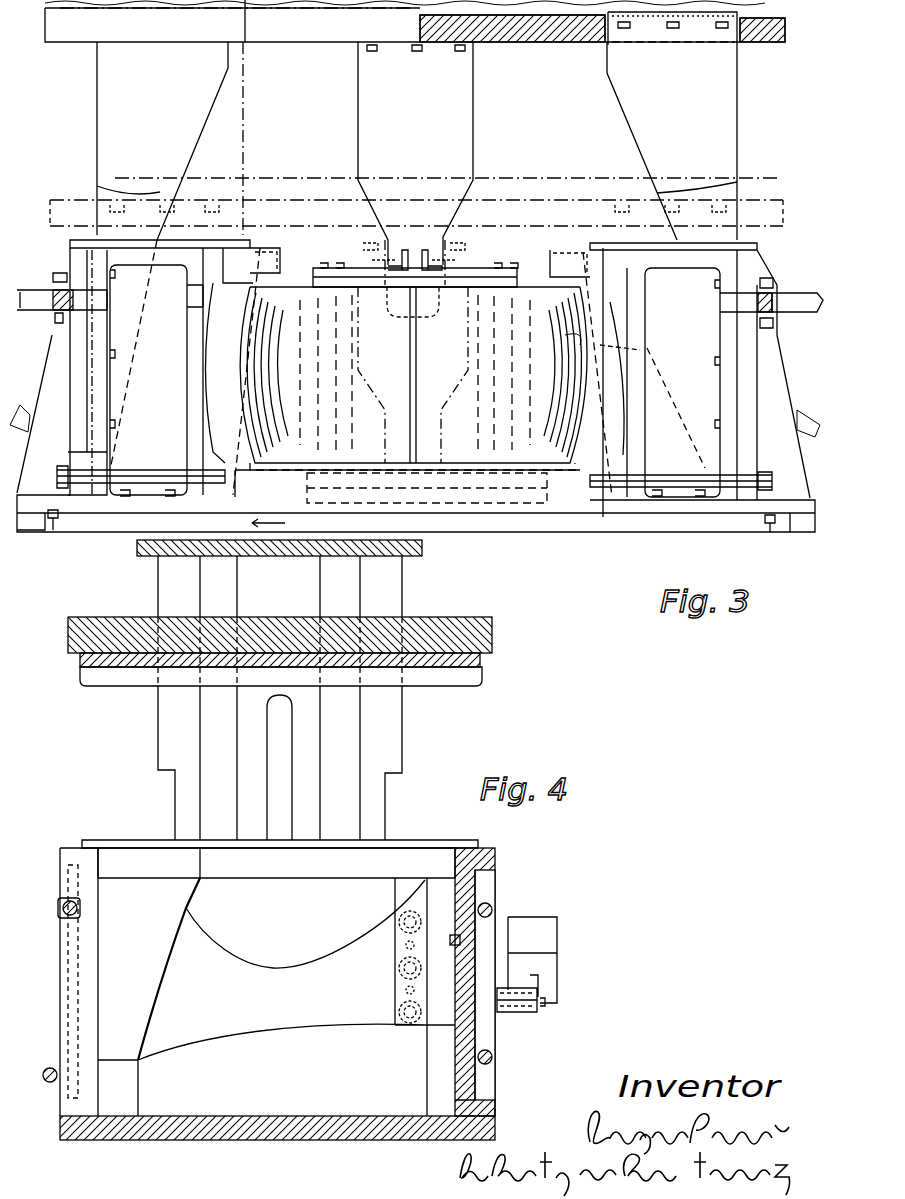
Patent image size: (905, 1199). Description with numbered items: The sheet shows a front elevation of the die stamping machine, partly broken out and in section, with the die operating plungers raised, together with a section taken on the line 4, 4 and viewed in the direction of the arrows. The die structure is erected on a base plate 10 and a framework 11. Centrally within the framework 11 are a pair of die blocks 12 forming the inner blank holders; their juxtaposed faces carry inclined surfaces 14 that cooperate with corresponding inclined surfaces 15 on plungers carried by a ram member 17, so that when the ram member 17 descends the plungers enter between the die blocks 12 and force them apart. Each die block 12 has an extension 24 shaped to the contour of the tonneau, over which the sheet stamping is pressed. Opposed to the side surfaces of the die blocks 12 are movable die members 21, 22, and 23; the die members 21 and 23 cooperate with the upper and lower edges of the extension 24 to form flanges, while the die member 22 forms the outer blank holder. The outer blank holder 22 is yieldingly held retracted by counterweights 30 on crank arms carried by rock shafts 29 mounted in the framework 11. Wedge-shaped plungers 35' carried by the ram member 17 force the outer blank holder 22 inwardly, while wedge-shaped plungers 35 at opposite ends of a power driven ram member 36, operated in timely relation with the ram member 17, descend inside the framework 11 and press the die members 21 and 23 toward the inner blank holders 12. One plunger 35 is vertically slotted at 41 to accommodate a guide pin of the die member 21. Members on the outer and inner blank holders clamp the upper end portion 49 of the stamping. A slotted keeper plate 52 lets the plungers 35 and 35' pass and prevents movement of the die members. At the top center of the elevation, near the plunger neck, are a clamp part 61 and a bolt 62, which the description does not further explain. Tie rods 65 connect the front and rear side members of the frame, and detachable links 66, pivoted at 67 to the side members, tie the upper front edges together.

In FIG. 3, the section line 4 is at (415, 255).
In FIG. 3, the base plate 10 is at (605, 533).
In FIG. 4, the base plate 10 is at (295, 1110).
In FIG. 3, the framework 11 is at (340, 30).
In FIG. 4, the framework 11 is at (490, 880).
In FIG. 3, the die blocks 12 is at (258, 318).
In FIG. 3, the inclined surfaces 14 is at (378, 405).
In FIG. 3, the inclined surfaces 15 is at (370, 210).
In FIG. 3, the ram member 17 is at (580, 45).
In FIG. 4, the ram member 17 is at (474, 609).
In FIG. 3, the die member 21 is at (676, 388).
In FIG. 4, the die member 21 is at (355, 912).
In FIG. 4, the outer blank holder 22 is at (332, 1008).
In FIG. 4, the die member 23 is at (340, 1100).
In FIG. 3, the extension 24 is at (642, 346).
In FIG. 4, the rock shafts 29 is at (530, 993).
In FIG. 4, the counterweights 30 is at (555, 933).
In FIG. 3, the wedge-shaped plungers 35 is at (406, 256).
In FIG. 4, the wedge-shaped plungers 35 is at (267, 698).
In FIG. 4, the wedge-shaped plungers 35' is at (275, 733).
In FIG. 4, the ram member 36 is at (428, 559).
In FIG. 4, the slot 41 is at (278, 745).
In FIG. 3, the upper end portion 49 is at (705, 310).
In FIG. 3, the keeper plate 52 is at (722, 248).
In FIG. 3, the clamp 61 is at (393, 267).
In FIG. 3, the bolt 62 is at (418, 262).
In FIG. 3, the tie rods 65 is at (152, 472).
In FIG. 4, the tie rods 65 is at (55, 1100).
In FIG. 3, the detachable links 66 is at (35, 308).
In FIG. 4, the detachable links 66 is at (56, 909).
In FIG. 3, the pivot 67 is at (55, 280).
In FIG. 4, the pivot 67 is at (71, 876).